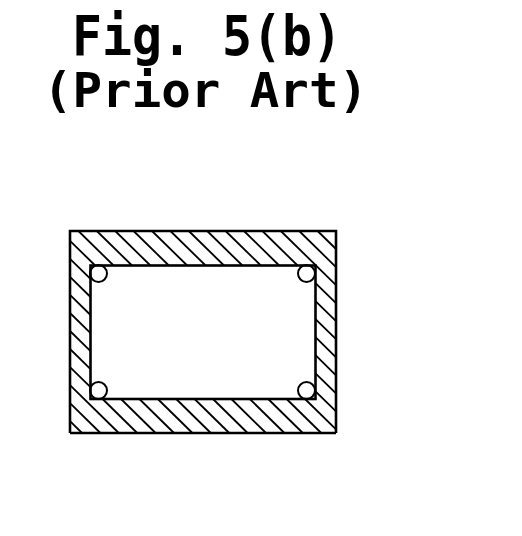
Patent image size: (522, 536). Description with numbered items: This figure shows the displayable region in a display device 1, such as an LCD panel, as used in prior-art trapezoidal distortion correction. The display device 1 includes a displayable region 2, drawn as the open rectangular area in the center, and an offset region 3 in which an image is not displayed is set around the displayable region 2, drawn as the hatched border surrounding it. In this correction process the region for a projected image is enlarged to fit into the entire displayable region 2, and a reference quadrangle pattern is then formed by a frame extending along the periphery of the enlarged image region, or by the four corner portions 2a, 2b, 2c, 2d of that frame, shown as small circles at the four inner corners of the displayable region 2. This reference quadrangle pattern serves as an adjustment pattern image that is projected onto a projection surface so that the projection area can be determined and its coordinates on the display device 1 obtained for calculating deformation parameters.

The display device 1 is at (282, 231).
The displayable region 2 is at (257, 378).
The corner portion 2a is at (98, 282).
The corner portion 2b is at (91, 381).
The corner portion 2c is at (306, 282).
The corner portion 2d is at (306, 382).
The offset region 3 is at (145, 416).